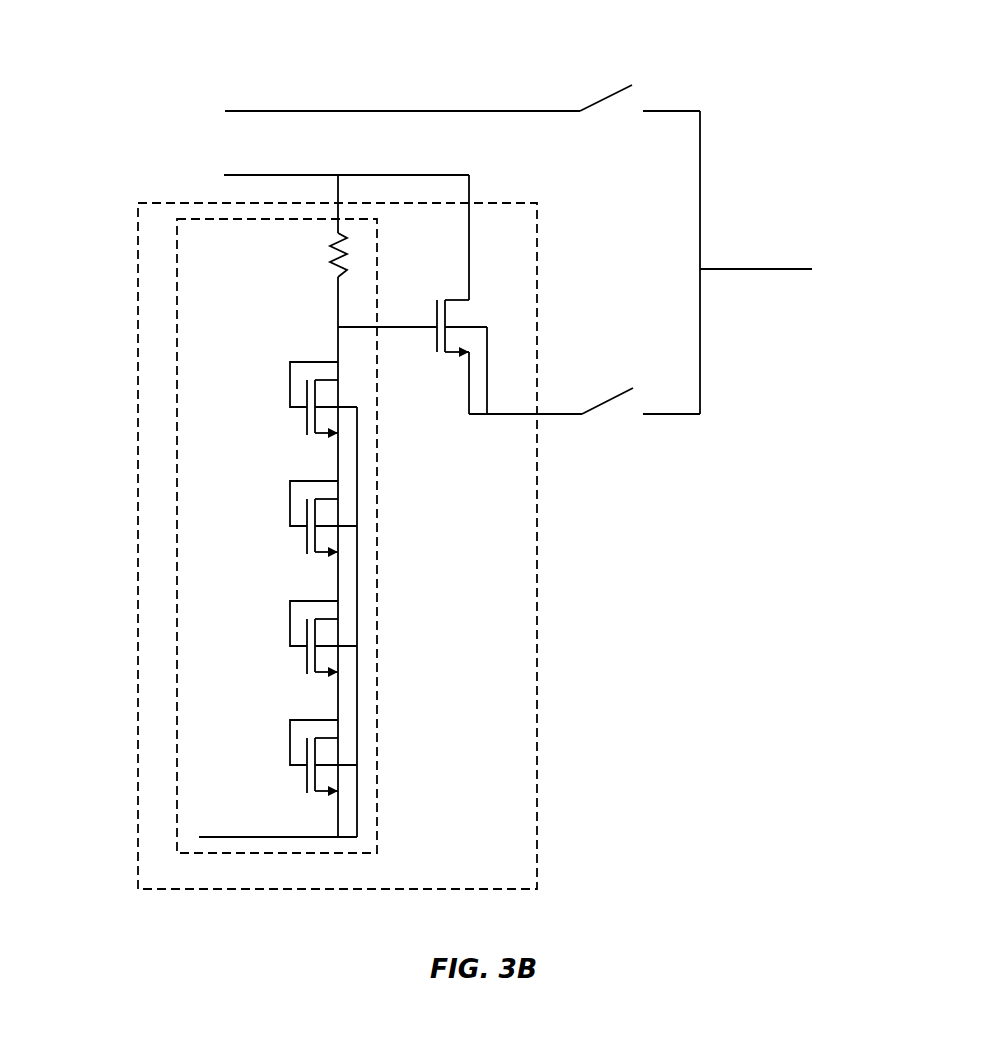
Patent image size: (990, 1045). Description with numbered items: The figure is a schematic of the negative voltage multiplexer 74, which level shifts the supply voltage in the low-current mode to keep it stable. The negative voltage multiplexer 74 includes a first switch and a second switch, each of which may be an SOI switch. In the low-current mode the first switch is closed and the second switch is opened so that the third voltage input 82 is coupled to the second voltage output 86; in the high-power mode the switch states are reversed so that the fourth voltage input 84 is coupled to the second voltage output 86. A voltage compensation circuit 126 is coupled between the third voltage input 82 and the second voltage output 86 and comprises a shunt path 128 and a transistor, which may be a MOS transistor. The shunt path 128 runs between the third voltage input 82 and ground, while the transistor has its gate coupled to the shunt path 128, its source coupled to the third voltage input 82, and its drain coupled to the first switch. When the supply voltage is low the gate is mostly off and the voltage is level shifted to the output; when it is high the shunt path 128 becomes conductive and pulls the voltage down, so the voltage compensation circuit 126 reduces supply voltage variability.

The fourth voltage input 84 is at (320, 111).
The third voltage input 82 is at (302, 175).
The negative voltage multiplexer 74 is at (865, 201).
The second voltage output 86 is at (767, 269).
The voltage compensation circuit 126 is at (510, 874).
The shunt path 128 is at (235, 252).